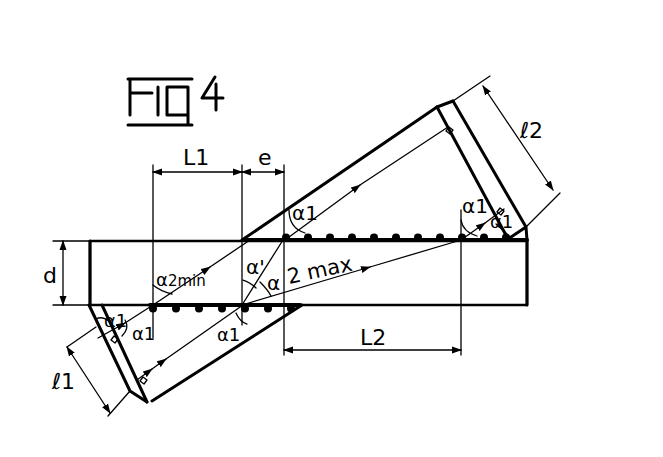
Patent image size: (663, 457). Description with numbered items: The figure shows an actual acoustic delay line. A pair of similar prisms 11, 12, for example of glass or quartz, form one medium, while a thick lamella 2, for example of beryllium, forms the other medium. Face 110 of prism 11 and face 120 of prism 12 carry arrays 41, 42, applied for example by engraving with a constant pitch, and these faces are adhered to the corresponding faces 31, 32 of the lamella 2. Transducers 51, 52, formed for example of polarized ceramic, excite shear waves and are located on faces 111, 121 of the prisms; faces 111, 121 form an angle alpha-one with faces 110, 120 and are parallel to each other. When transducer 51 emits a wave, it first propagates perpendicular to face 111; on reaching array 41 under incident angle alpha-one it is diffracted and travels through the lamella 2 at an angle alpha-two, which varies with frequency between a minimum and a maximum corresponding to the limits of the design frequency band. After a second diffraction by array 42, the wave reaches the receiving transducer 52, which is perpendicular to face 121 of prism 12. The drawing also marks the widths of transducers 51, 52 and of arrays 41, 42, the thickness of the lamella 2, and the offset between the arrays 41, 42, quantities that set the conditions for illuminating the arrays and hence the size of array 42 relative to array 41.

The lamella 2 is at (515, 278).
The prism 11 is at (182, 380).
The prism 12 is at (381, 147).
The face of lamella 31 is at (519, 307).
The face of lamella 32 is at (135, 240).
The array 41 is at (194, 311).
The array 42 is at (416, 236).
The transducer 51 is at (134, 394).
The transducer 52 is at (522, 212).
The face of prism 110 is at (270, 330).
The face of prism 111 is at (144, 396).
The face of prism 120 is at (258, 230).
The face of prism 121 is at (446, 90).